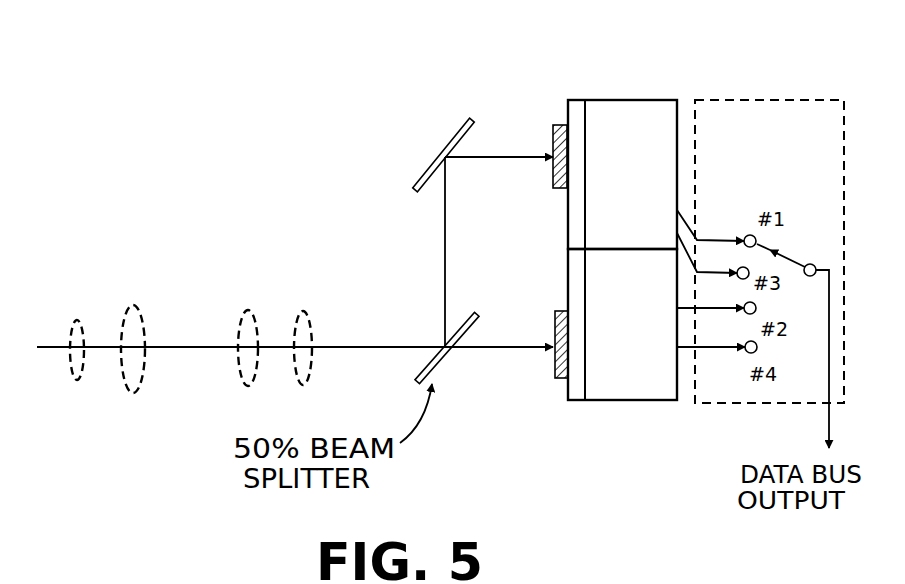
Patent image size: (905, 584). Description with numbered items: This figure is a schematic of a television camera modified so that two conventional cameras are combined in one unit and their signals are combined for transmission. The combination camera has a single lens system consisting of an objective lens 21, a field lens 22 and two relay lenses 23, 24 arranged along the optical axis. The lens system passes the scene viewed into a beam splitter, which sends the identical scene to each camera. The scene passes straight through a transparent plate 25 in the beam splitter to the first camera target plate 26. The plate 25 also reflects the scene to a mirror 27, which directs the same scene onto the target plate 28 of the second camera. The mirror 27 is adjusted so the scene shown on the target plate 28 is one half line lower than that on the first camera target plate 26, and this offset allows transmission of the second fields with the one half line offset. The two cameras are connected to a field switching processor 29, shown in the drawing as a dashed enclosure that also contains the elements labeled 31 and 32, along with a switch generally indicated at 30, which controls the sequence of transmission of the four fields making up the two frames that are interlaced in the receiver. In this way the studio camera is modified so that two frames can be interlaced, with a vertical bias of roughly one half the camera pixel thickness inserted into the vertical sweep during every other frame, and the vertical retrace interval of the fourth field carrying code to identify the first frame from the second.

The objective lens 21 is at (78, 320).
The field lens 22 is at (134, 305).
The relay lens 23 is at (248, 310).
The relay lens 24 is at (303, 311).
The transparent plate 25 is at (448, 362).
The first camera target plate 26 is at (556, 370).
The mirror 27 is at (455, 130).
The target plate 28 is at (551, 186).
The field switching processor 29 is at (742, 120).
The switch 30 is at (628, 401).
The detector electronics 31 is at (631, 115).
The switch 32 is at (806, 230).